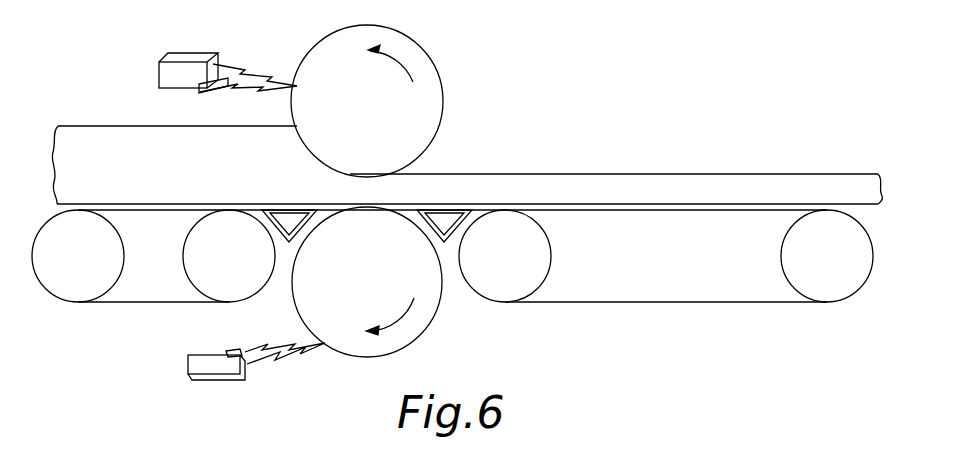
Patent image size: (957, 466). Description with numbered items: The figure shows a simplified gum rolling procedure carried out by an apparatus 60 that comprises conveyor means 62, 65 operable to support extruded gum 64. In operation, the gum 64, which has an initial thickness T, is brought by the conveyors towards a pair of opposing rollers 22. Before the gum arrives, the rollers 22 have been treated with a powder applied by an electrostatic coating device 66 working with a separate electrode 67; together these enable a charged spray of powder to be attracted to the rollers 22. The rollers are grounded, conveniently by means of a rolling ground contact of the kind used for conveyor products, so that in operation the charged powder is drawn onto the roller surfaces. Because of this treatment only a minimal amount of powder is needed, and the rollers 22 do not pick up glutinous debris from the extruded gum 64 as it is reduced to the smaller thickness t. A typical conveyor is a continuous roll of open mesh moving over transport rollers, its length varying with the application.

The opposing rollers 22 is at (441, 78).
The apparatus 60 is at (796, 330).
The conveyor means 62 is at (79, 272).
The extruded gum 64 is at (92, 170).
The conveyor means 65 is at (444, 222).
The electrostatic coating device 66 is at (158, 68).
The separate electrode 67 is at (211, 92).